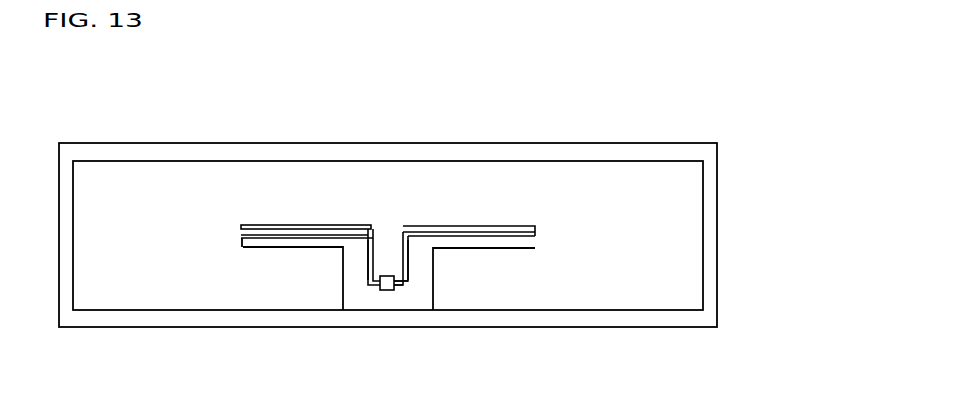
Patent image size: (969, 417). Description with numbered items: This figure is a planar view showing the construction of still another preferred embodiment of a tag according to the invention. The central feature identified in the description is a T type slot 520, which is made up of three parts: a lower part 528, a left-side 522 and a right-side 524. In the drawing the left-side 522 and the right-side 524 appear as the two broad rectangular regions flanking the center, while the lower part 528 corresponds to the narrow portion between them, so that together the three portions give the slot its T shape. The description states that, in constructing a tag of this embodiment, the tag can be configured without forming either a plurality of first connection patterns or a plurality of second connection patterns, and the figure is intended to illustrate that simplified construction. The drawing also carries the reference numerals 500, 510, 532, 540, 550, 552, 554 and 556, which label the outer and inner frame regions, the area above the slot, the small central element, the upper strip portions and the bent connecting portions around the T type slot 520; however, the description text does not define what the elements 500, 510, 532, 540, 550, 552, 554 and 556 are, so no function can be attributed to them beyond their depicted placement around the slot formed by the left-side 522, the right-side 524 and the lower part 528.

The electronic device housing 500 is at (717, 193).
The inner housing / substrate region 510 is at (643, 160).
The T type slot 520 is at (388, 250).
The left-side 522 is at (247, 244).
The right-side 524 is at (530, 243).
The lower part 528 is at (417, 287).
The dielectric layer 532 is at (386, 192).
The feed element 540 is at (390, 291).
The first radiator 550 is at (369, 226).
The connection line 552 is at (375, 291).
The bent portion 554 is at (368, 259).
The second radiator 556 is at (443, 236).